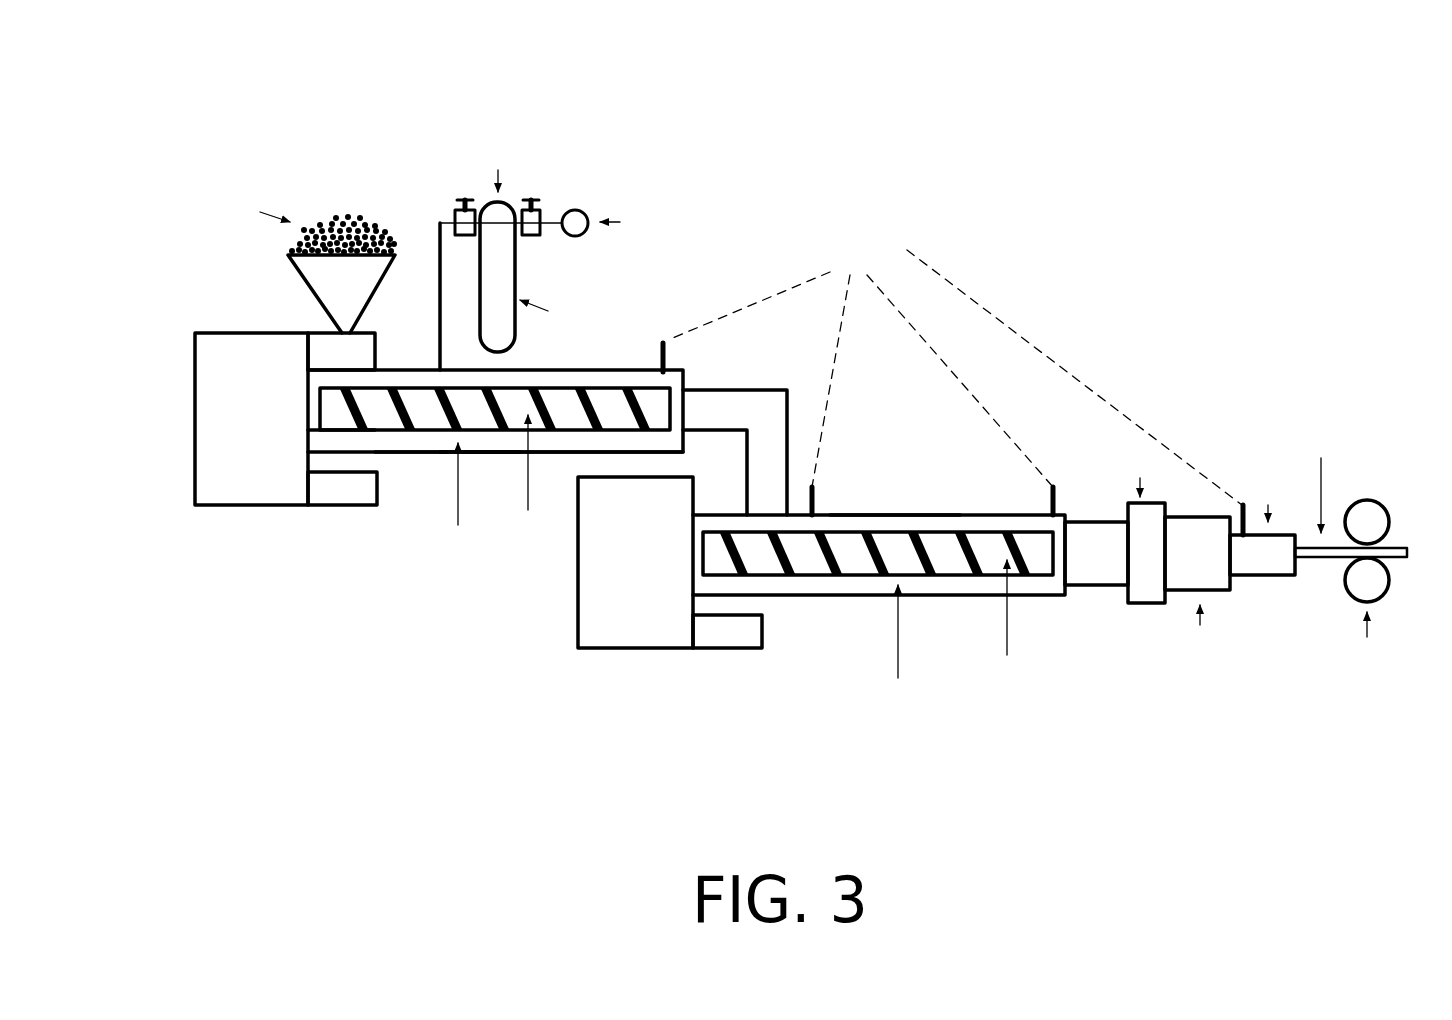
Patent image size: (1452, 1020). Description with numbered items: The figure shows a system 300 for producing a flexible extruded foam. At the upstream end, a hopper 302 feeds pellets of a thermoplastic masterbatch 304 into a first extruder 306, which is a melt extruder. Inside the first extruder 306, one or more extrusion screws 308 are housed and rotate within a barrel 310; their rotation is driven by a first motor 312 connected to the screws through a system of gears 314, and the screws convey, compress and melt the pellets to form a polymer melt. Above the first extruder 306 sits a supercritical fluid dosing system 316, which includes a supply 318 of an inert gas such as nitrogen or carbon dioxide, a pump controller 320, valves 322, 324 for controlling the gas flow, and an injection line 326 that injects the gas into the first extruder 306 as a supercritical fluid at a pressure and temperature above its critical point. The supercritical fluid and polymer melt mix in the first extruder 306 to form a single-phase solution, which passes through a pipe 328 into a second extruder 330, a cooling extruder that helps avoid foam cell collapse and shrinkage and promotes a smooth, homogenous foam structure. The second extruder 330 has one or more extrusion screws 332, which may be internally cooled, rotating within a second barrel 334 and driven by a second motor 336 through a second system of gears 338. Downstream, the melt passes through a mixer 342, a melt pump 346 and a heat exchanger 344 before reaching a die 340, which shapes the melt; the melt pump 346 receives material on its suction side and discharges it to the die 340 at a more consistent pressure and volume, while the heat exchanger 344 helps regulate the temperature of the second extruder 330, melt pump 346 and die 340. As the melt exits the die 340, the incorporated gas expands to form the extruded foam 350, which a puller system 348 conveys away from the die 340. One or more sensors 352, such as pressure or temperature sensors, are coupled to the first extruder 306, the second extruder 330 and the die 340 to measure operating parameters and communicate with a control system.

The system 300 is at (1080, 80).
The hopper 302 is at (327, 295).
The masterbatch 304 is at (335, 218).
The first extruder 306 is at (413, 447).
The extrusion screws 308 is at (600, 403).
The barrel 310 is at (487, 447).
The first motor 312 is at (327, 500).
The system of gears 314 is at (225, 360).
The supercritical fluid dosing system 316 is at (580, 78).
The supply 318 is at (500, 268).
The pump controller 320 is at (573, 213).
The valve 322 is at (533, 205).
The valve 324 is at (455, 210).
The injection line 326 is at (440, 282).
The pipe 328 is at (768, 413).
The second extruder 330 is at (865, 592).
The extrusion screws 332 is at (1033, 570).
The second barrel 334 is at (893, 520).
The second motor 336 is at (718, 640).
The second system of gears 338 is at (620, 627).
The die 340 is at (1262, 558).
The mixer 342 is at (1115, 575).
The heat exchanger 344 is at (1203, 548).
The melt pump 346 is at (1143, 590).
The puller system 348 is at (1337, 558).
The extruded foam 350 is at (1403, 548).
The sensors 352 is at (953, 374).